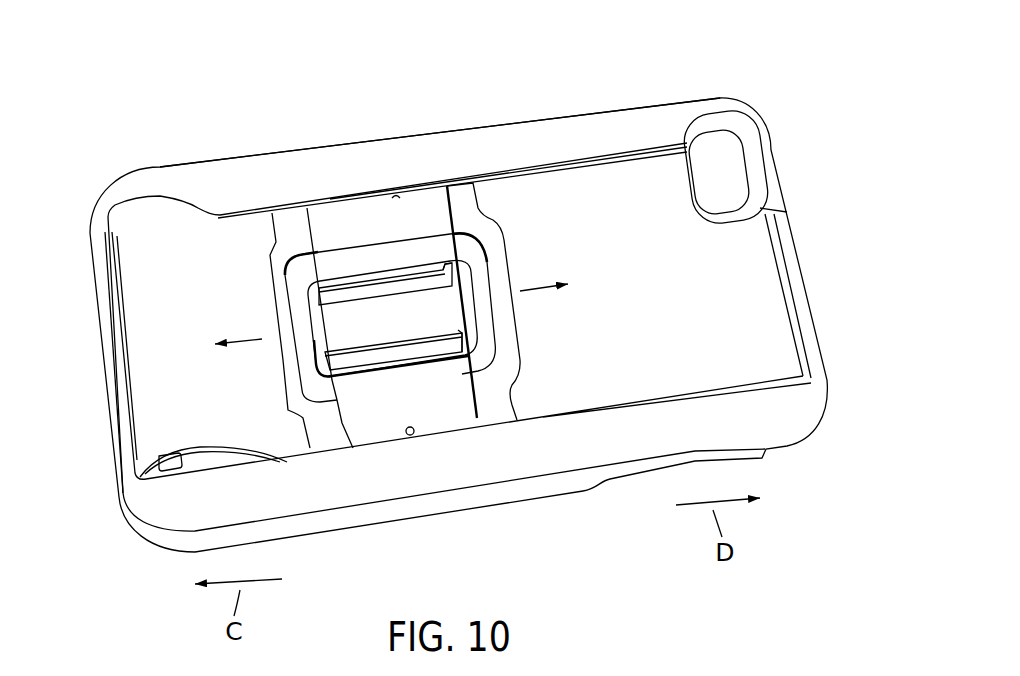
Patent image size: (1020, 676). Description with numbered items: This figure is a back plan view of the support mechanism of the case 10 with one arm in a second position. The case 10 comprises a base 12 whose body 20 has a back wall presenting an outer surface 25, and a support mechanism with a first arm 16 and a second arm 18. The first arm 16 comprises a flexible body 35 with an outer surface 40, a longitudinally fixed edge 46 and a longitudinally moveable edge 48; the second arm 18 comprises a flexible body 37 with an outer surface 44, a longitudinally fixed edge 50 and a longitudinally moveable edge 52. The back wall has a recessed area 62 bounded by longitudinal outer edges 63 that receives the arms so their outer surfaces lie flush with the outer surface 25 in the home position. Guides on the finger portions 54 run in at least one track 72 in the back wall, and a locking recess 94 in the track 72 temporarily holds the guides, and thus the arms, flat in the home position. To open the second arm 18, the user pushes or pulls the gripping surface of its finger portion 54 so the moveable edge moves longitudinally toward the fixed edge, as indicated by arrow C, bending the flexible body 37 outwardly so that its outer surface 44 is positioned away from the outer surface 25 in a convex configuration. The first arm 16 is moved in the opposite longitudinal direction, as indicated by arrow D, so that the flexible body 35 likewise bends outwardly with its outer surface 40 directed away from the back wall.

The case 10 is at (122, 126).
The base 12 is at (734, 97).
The first arm 16 is at (757, 253).
The second arm 18 is at (132, 328).
The body 20 is at (558, 130).
The outer surface 25 is at (263, 175).
The flexible body 35 is at (712, 372).
The flexible body 37 is at (150, 442).
The outer surface 40 is at (621, 314).
The outer surface 44 is at (194, 397).
The longitudinally fixed edge 46 is at (793, 295).
The longitudinally moveable edge 48 is at (470, 413).
The longitudinally fixed edge 50 is at (108, 301).
The longitudinally moveable edge 52 is at (318, 238).
The finger portion 54 is at (470, 218).
The recessed area 62 is at (372, 192).
The outer edges 63 is at (395, 197).
The track 72 is at (396, 288).
The locking recess 94 is at (446, 268).